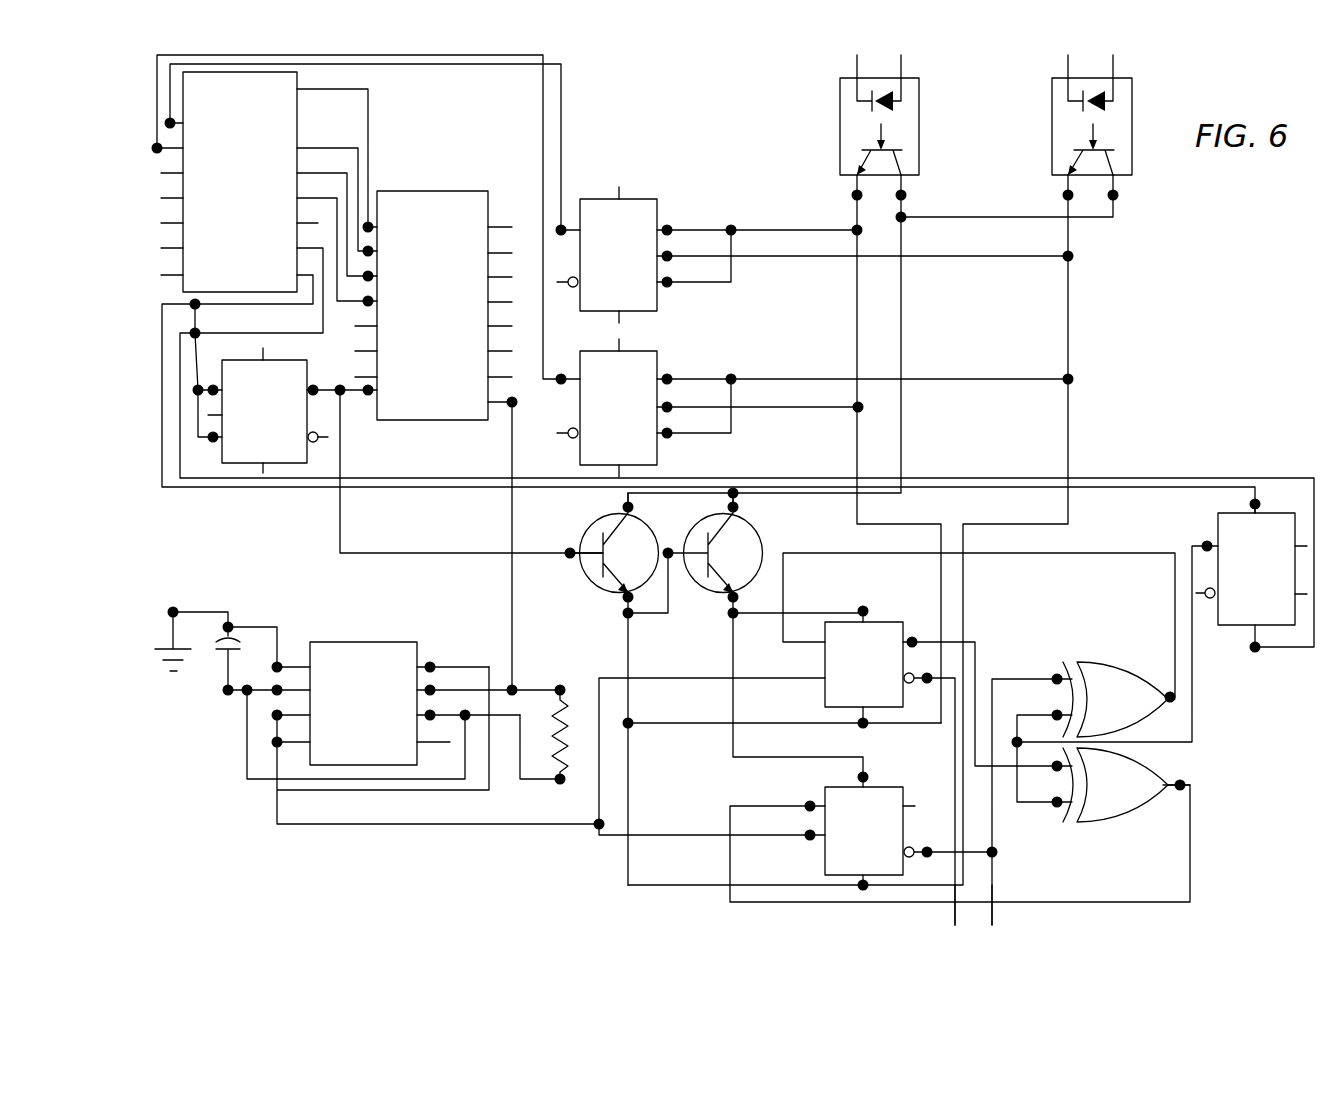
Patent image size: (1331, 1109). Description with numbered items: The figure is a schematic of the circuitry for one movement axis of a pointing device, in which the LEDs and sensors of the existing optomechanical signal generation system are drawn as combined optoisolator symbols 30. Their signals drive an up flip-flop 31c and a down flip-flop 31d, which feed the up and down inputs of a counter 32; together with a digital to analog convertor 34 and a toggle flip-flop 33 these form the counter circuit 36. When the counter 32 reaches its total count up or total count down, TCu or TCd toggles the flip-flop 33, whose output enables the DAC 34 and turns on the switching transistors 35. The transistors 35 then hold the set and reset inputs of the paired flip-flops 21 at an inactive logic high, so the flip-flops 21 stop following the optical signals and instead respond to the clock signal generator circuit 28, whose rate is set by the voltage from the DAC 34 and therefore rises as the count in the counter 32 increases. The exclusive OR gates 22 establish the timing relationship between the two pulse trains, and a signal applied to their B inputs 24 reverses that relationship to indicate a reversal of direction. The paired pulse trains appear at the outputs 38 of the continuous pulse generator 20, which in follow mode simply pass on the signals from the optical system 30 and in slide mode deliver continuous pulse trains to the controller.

The continuous pulse generator 20 is at (373, 763).
The paired flip-flops 21 is at (883, 707).
The exclusive OR gates 22 is at (1160, 783).
The B inputs of the XOR gates 24 is at (1258, 617).
The clock signal generator circuit 28 is at (355, 766).
The optoisolator symbols 30 is at (1052, 88).
The up flip-flop 31c is at (638, 198).
The down flip-flop 31d is at (638, 351).
The counter 32 is at (183, 290).
The toggle flip-flop 33 is at (242, 464).
The digital to analog convertor 34 is at (423, 191).
The switching transistors 35 is at (606, 608).
The counter circuit 36 is at (414, 219).
The outputs 38 is at (920, 917).